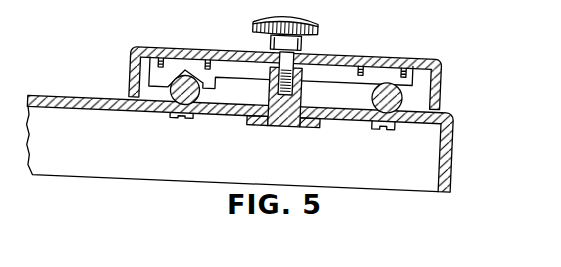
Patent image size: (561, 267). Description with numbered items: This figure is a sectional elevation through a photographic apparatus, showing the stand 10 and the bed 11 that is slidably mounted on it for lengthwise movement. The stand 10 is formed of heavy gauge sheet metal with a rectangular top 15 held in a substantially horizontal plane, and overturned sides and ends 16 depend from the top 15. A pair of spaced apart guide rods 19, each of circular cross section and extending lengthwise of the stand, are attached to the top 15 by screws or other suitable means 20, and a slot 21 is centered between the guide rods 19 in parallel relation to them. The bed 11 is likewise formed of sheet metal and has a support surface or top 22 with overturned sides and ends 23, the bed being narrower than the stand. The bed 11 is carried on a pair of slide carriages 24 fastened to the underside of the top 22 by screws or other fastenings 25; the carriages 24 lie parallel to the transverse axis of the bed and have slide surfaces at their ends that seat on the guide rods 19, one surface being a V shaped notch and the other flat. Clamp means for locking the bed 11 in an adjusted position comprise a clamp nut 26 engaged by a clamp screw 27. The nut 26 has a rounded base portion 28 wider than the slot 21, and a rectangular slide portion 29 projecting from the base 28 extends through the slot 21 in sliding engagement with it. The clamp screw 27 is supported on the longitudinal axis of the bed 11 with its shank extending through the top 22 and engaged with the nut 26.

The stand 10 is at (271, 143).
The bed 11 is at (290, 56).
The top 15 is at (73, 102).
The overturned sides and ends 16 is at (450, 170).
The guide rod 19 is at (170, 97).
The screws 20 is at (185, 119).
The slot 21 is at (267, 108).
The top 22 is at (335, 58).
The overturned sides and ends 23 is at (132, 66).
The slide carriage 24 is at (235, 65).
The screws 25 is at (162, 44).
The clamp nut 26 is at (256, 132).
The clamp screw 27 is at (313, 23).
The base portion 28 is at (289, 115).
The slide portion 29 is at (290, 103).